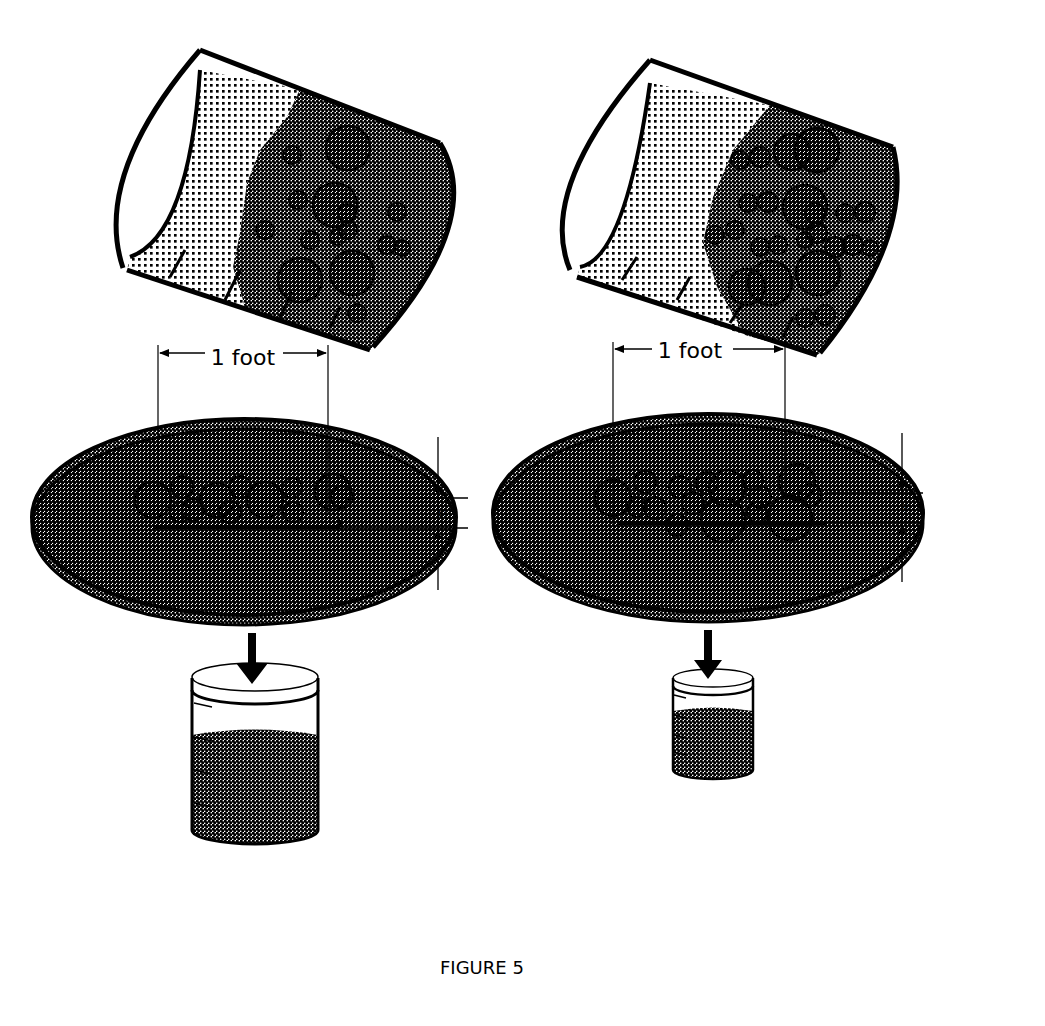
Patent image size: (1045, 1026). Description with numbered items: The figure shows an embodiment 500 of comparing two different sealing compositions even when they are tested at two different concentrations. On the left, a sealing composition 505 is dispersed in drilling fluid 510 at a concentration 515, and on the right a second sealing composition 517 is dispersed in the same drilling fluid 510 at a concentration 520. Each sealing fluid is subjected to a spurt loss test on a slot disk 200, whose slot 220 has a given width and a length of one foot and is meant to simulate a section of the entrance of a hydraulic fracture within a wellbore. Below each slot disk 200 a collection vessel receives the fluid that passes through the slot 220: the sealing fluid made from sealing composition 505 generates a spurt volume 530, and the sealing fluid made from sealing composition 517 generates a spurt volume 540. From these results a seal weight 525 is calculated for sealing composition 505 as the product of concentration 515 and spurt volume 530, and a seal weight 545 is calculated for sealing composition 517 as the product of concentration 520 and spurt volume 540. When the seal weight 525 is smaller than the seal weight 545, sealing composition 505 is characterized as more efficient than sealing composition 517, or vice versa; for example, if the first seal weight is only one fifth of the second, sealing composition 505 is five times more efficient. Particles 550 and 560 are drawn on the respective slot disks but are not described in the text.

The embodiment of comparing two different sealing compositions 500 is at (122, 95).
The sealing composition 505 is at (335, 203).
The drilling fluid 510 is at (757, 127).
The concentration 515 is at (402, 172).
The sealing composition 517 is at (805, 207).
The concentration 520 is at (862, 177).
The seal weight 525 is at (87, 478).
The seal weight 545 is at (762, 433).
The particle on first slot disk 550 is at (265, 482).
The particle on second slot disk 560 is at (682, 477).
The slot disk 200 is at (597, 458).
The slot 220 is at (645, 525).
The spurt volume 530 is at (298, 788).
The spurt volume 540 is at (685, 743).